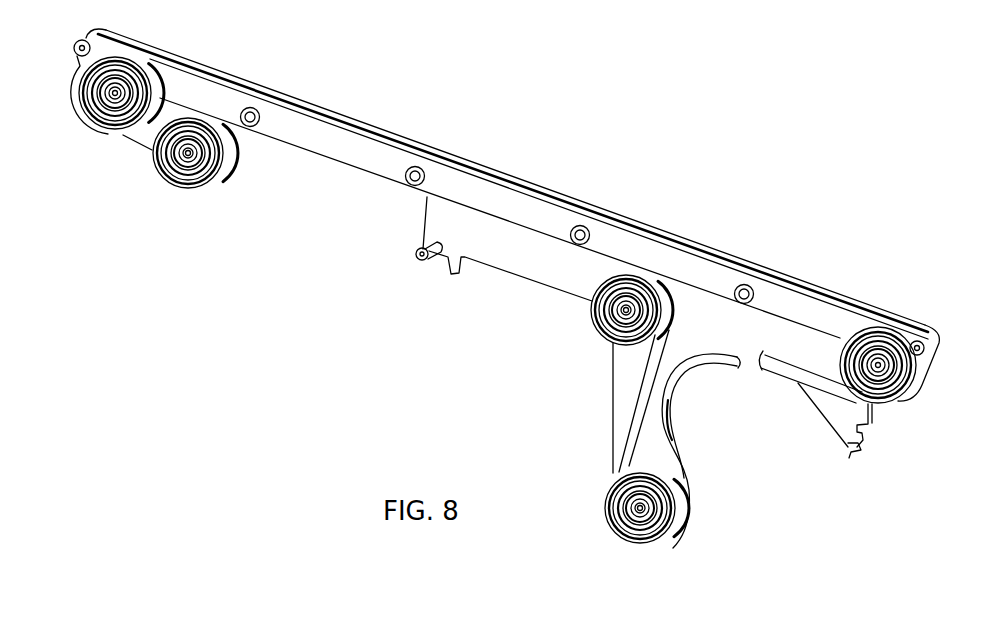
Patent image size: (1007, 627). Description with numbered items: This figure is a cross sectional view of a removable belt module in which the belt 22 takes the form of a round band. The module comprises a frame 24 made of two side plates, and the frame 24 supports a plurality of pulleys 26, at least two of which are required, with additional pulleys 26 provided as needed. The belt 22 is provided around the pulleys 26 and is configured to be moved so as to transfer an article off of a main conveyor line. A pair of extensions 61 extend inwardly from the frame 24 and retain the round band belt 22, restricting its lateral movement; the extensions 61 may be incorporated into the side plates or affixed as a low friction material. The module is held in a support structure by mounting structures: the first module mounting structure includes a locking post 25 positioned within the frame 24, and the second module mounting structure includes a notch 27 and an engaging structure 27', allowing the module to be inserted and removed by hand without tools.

The belt 22 is at (879, 320).
The frame 24 is at (758, 358).
The locking post 25 is at (435, 250).
The pulley 26 is at (108, 113).
The notch 27 is at (885, 430).
The engaging structure 27' is at (850, 462).
The extension 61 is at (426, 151).